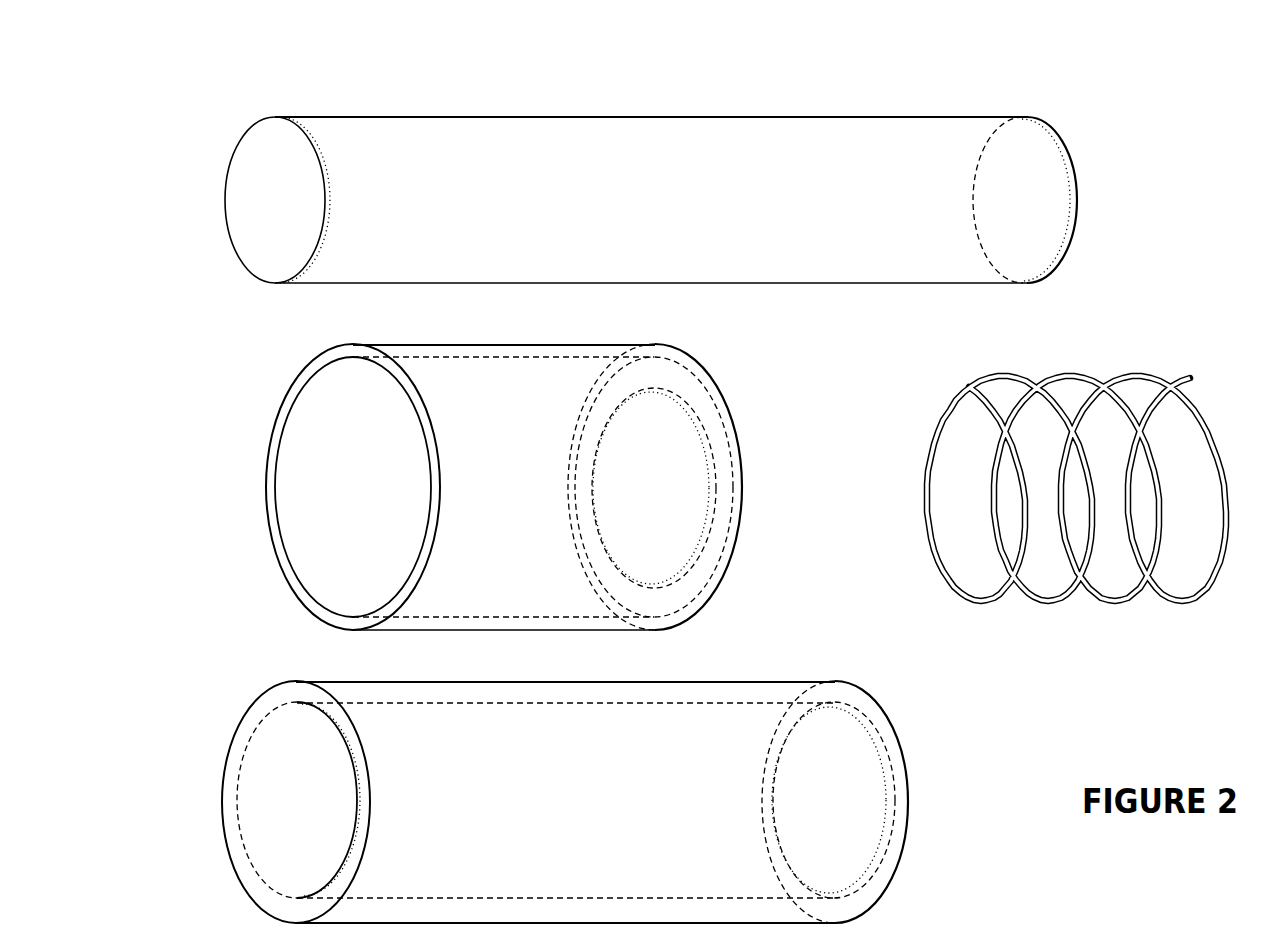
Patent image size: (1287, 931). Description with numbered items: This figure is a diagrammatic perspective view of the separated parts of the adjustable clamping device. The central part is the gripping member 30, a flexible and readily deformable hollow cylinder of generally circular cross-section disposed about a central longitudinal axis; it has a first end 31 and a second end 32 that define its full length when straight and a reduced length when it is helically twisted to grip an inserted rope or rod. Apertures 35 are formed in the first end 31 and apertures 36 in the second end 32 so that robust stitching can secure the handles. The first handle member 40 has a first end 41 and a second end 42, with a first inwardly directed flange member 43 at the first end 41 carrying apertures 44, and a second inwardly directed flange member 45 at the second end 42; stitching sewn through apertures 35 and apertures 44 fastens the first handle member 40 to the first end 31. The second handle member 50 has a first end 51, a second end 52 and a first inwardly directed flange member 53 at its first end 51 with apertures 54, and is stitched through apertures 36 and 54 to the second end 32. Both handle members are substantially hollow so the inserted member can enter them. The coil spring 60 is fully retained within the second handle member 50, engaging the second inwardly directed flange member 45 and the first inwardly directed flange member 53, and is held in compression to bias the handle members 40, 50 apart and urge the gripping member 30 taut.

The gripping member 30 is at (765, 117).
The first end of gripping member 31 is at (275, 117).
The second end of gripping member 32 is at (1027, 117).
The apertures in first end of gripping member 35 is at (235, 178).
The apertures in second end of gripping member 36 is at (1075, 175).
The first handle member 40 is at (512, 682).
The first end of first handle member 41 is at (296, 682).
The second end of first handle member 42 is at (837, 682).
The first inwardly directed flange member of first handle member 43 is at (237, 752).
The apertures in first inwardly directed flange member 44 is at (268, 718).
The second inwardly directed flange member of first handle member 45 is at (894, 750).
The second handle member 50 is at (545, 345).
The first end of second handle member 51 is at (655, 345).
The second end of second handle member 52 is at (345, 345).
The first inwardly directed flange member of second handle member 53 is at (720, 517).
The apertures in first inwardly directed flange member of second handle member 54 is at (688, 567).
The coil spring 60 is at (1067, 372).